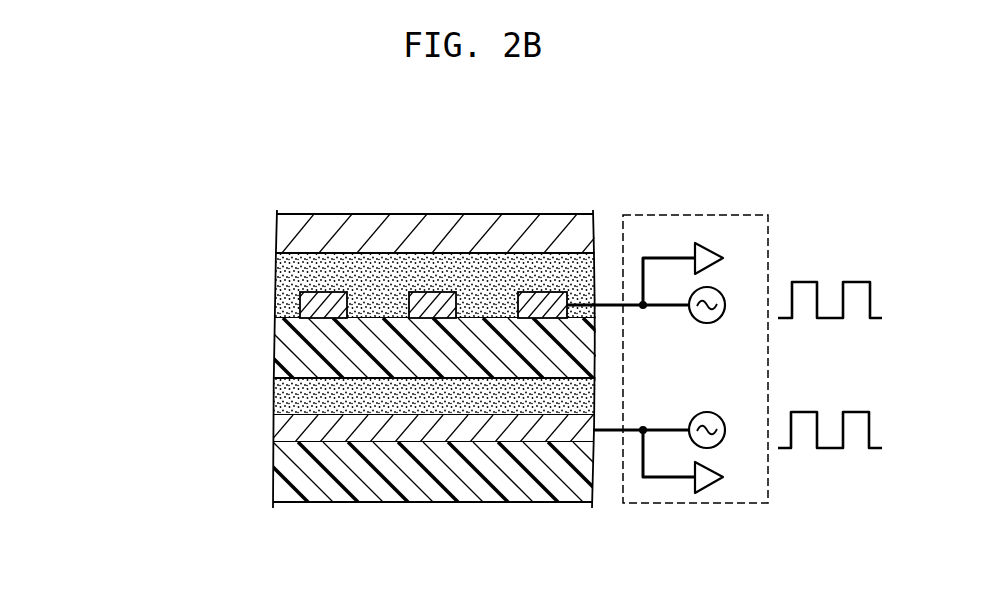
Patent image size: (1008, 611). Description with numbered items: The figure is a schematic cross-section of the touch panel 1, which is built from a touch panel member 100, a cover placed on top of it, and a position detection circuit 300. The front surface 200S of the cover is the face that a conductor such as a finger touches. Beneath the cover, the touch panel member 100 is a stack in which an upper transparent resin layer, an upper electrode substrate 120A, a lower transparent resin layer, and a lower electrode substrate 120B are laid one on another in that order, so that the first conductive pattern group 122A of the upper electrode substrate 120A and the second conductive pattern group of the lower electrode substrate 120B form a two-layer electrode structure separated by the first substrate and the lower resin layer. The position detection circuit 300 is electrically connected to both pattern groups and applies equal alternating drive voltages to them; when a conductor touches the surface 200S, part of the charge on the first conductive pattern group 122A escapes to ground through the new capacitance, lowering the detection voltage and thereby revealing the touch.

The touch panel 1 is at (70, 563).
The touch panel member 100 is at (125, 499).
The surface of cover 200S is at (517, 214).
The position detection circuit 300 is at (476, 386).
The first electrode substrate 120A is at (196, 284).
The second electrode substrate 120B is at (196, 417).
The first conductive pattern group 122A is at (318, 307).